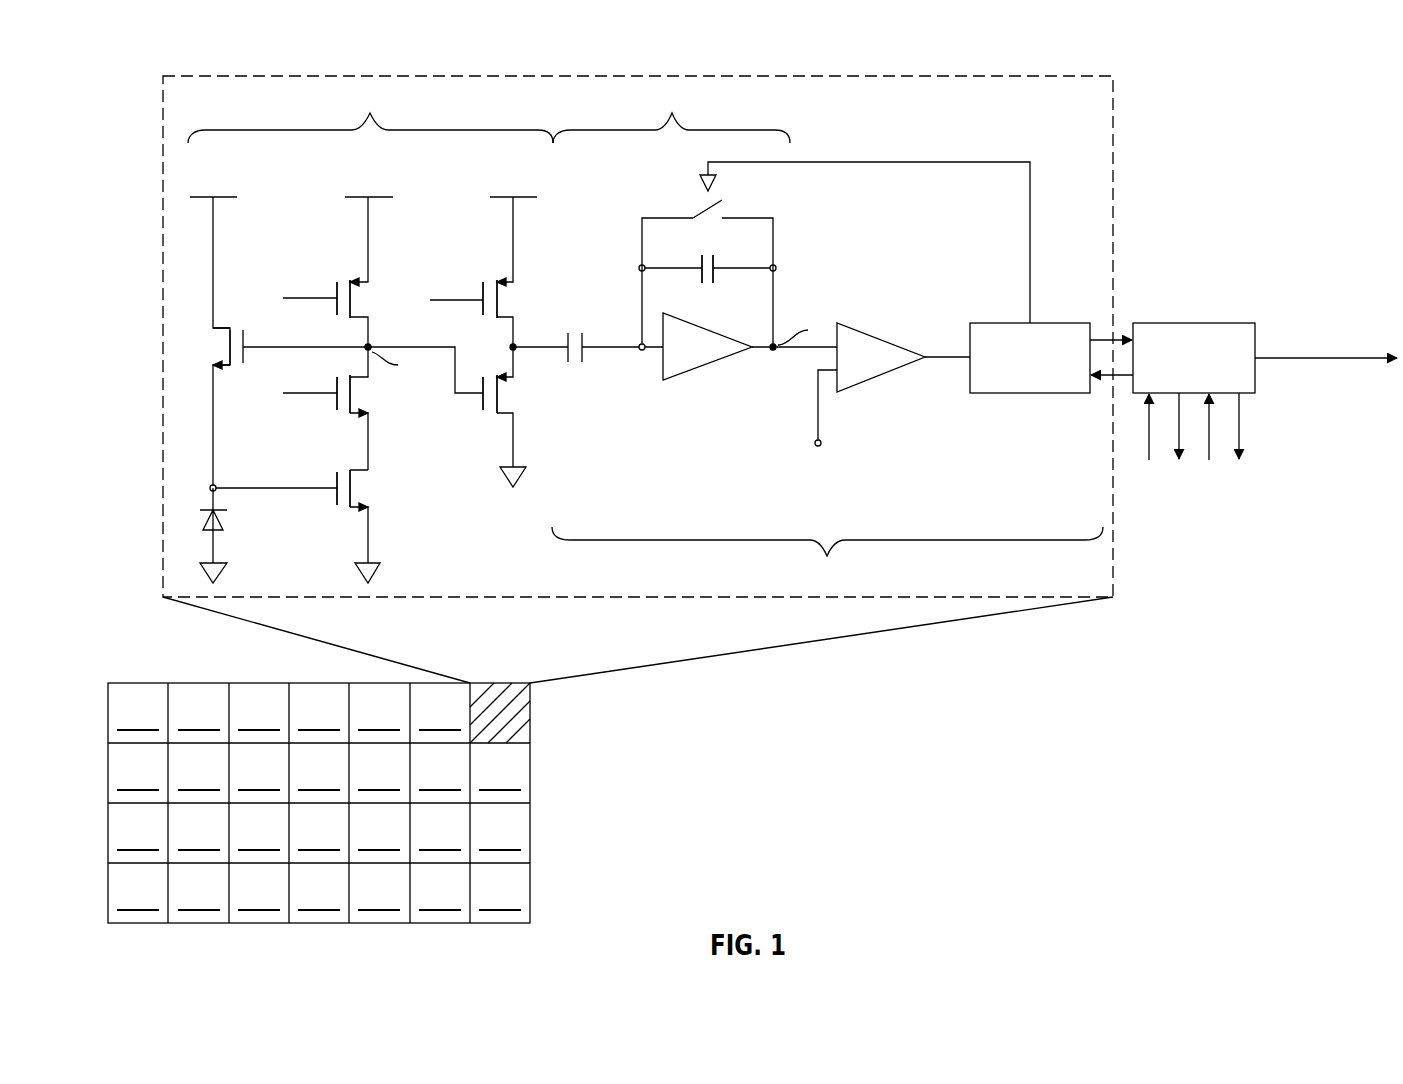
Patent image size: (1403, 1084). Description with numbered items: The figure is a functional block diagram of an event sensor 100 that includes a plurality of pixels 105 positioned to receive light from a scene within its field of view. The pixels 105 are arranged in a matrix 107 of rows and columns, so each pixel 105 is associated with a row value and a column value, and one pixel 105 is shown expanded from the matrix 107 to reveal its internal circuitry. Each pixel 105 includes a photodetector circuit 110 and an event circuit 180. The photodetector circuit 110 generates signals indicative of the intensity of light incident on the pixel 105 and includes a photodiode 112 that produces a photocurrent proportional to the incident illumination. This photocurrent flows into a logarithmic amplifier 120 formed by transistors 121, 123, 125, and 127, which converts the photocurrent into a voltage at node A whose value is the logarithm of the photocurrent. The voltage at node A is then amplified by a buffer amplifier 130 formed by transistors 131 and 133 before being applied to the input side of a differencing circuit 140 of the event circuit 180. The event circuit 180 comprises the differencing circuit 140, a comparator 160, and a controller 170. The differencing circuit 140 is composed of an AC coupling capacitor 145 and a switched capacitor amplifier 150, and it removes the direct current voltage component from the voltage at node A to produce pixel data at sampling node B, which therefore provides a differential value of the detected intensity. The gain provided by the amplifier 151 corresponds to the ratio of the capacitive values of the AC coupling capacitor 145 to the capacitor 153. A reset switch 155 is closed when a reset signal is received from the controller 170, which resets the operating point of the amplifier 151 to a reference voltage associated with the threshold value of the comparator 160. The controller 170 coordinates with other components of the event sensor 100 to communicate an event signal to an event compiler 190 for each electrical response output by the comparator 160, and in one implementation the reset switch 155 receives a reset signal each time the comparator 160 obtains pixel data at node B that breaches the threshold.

The event sensor 100 is at (1230, 106).
The pixel 105 is at (240, 74).
The matrix 107 is at (530, 835).
The photodetector circuit 110 is at (370, 111).
The photodiode 112 is at (222, 520).
The logarithmic amplifier 120 is at (279, 232).
The transistor 121 is at (210, 347).
The transistor 123 is at (370, 302).
The transistor 125 is at (370, 393).
The transistor 127 is at (370, 488).
The buffer amplifier 130 is at (568, 232).
The transistor 131 is at (515, 298).
The transistor 133 is at (512, 393).
The differencing circuit 140 is at (671, 111).
The AC coupling capacitor 145 is at (590, 352).
The switched capacitor amplifier 150 is at (689, 422).
The amplifier 151 is at (708, 364).
The capacitor 153 is at (718, 262).
The reset switch 155 is at (705, 206).
The comparator 160 is at (880, 374).
The controller 170 is at (1035, 323).
The event circuit 180 is at (827, 559).
The event compiler 190 is at (1185, 323).